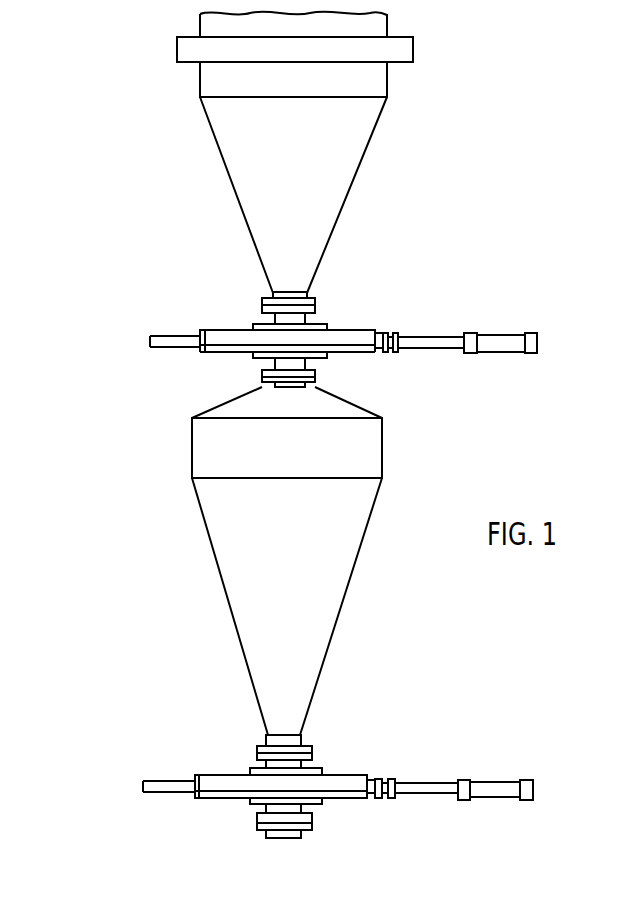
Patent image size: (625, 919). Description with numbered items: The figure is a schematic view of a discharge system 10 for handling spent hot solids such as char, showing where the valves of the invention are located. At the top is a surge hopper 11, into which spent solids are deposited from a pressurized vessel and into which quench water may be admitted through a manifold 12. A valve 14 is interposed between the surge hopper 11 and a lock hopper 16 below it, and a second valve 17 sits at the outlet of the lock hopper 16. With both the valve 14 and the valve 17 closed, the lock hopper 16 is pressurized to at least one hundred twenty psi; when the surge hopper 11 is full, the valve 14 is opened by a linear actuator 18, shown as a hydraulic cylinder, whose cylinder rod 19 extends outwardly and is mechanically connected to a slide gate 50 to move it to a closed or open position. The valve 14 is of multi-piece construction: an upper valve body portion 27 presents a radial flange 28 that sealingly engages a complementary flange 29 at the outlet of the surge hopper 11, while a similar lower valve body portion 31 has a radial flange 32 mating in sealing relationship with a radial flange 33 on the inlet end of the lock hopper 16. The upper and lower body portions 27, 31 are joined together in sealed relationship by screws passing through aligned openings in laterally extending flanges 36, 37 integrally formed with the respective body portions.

The system 10 is at (128, 187).
The surge hopper 11 is at (327, 178).
The manifold 12 is at (392, 50).
The valve 14 is at (137, 372).
The lock hopper 16 is at (225, 553).
The valve 17 is at (227, 808).
The linear actuator 18 is at (510, 340).
The cylinder rod 19 is at (437, 340).
The upper valve body portion 27 is at (274, 315).
The radial flange 28 is at (317, 310).
The complementary flange 29 is at (266, 297).
The lower valve body portion 31 is at (273, 362).
The radial flange 32 is at (310, 358).
The radial flange 33 is at (313, 382).
The laterally extending flange 36 is at (320, 325).
The laterally extending flange 37 is at (255, 352).
The slide gate 50 is at (357, 335).